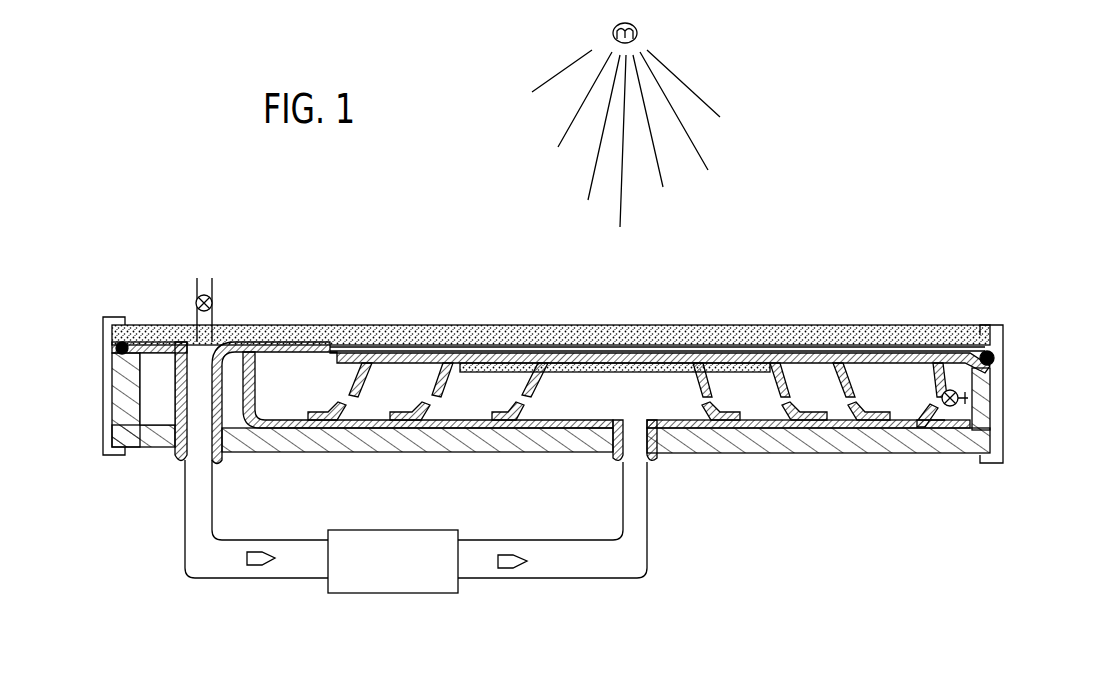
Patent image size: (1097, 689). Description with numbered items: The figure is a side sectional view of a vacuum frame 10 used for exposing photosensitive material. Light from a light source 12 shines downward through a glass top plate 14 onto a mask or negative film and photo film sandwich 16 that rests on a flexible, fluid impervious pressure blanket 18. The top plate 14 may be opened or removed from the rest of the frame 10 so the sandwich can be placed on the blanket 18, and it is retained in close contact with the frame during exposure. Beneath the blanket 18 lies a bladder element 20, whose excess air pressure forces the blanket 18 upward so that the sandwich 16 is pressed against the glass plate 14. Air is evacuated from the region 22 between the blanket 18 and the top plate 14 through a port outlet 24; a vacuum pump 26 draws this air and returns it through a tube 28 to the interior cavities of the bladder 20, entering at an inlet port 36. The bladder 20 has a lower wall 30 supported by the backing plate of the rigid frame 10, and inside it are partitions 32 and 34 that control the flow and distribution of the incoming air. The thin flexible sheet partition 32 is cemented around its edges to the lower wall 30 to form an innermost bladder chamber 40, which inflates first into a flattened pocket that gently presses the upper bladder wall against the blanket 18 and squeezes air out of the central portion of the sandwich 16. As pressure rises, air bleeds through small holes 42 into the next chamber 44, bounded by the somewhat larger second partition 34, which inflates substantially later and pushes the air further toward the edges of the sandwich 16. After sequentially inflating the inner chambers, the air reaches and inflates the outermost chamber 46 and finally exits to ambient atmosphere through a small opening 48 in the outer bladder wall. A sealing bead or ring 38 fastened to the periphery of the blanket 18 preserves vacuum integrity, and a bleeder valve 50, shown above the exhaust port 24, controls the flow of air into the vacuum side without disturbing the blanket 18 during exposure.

The frame 10 is at (985, 423).
The light source 12 is at (640, 30).
The glass top plate 14 is at (912, 332).
The mask/photo film sandwich 16 is at (748, 350).
The pressure blanket 18 is at (368, 357).
The bladder element 20 is at (890, 395).
The evacuated region 22 is at (325, 341).
The port outlet 24 is at (170, 393).
The vacuum pump 26 is at (394, 573).
The tube 28 is at (556, 580).
The lower wall 30 is at (852, 432).
The partition 32 is at (697, 388).
The partition 34 is at (348, 388).
The inlet port 36 is at (640, 458).
The sealing bead 38 is at (995, 358).
The innermost bladder chamber 40 is at (565, 391).
The small holes 42 is at (718, 402).
The second bladder chamber 44 is at (434, 391).
The outermost chamber 46 is at (428, 390).
The small opening 48 is at (953, 408).
The bleeder valve 50 is at (196, 300).